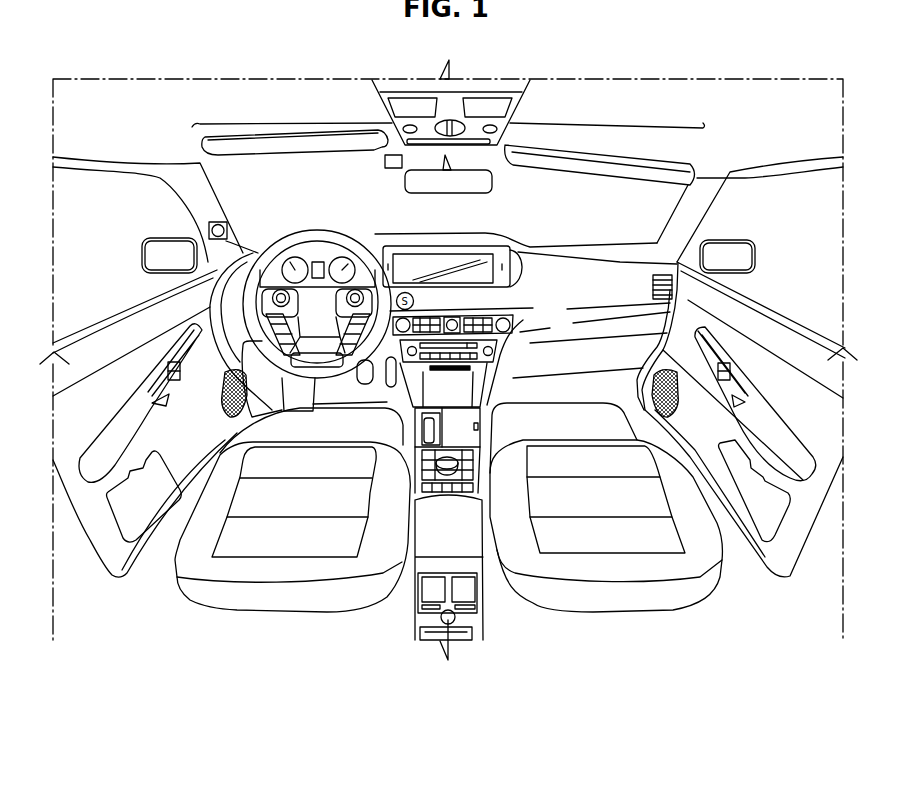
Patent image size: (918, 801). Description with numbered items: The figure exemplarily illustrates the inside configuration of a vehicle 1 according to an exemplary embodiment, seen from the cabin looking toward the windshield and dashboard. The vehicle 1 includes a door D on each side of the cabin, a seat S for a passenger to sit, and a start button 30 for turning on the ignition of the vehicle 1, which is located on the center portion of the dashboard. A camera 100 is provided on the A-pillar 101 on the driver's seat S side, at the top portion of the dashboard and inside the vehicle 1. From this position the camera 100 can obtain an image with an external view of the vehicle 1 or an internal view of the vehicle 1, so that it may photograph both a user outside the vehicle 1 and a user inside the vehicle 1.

The vehicle 1 is at (100, 123).
The start button 30 is at (400, 283).
The camera 100 is at (230, 223).
The A-pillar 101 is at (186, 189).
The door D is at (120, 330).
The seat S is at (285, 597).